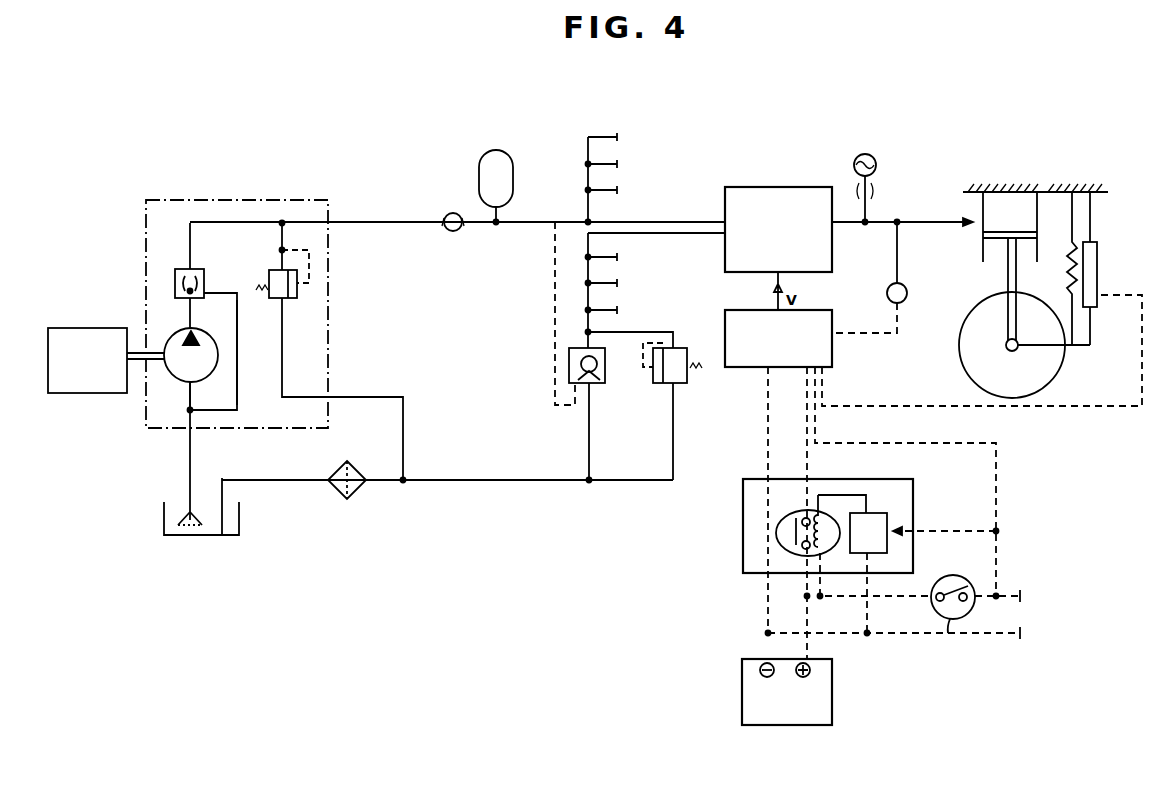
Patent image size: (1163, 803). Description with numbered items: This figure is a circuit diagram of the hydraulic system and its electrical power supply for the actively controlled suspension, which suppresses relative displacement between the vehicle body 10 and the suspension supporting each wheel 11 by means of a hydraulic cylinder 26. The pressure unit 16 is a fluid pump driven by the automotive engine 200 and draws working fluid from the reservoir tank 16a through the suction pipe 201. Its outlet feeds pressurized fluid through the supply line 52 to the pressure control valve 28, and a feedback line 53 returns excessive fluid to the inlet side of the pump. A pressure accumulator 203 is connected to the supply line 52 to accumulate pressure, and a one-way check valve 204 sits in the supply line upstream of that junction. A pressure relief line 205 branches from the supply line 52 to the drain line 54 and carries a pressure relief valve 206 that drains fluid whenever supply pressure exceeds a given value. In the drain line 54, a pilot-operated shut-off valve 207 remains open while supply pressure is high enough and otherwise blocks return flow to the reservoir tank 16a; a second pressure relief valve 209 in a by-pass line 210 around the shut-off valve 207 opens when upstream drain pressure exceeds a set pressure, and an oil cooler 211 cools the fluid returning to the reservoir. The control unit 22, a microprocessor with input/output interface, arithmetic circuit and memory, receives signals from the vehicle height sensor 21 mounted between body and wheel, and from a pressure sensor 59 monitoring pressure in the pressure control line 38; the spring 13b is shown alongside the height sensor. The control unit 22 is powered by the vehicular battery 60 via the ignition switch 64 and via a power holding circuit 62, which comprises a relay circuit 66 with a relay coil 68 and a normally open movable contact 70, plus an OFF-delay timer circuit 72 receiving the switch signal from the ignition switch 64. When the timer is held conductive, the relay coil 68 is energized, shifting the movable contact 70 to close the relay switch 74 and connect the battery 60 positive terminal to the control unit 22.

The automotive engine 200 is at (87, 327).
The pressure unit 16 is at (167, 387).
The reservoir tank 16a is at (163, 518).
The suction pipe 201 is at (190, 464).
The feedback line 53 is at (237, 333).
The pressure relief valve 206 is at (297, 294).
The pressure relief line 205 is at (282, 358).
The supply line 52 is at (358, 222).
The one-way check valve 204 is at (450, 214).
The pressure accumulator 203 is at (514, 168).
The shut-off valve 207 is at (569, 370).
The by-pass line 210 is at (671, 432).
The pressure relief valve 209 is at (688, 385).
The drain line 54 is at (528, 482).
The oil cooler 211 is at (360, 492).
The pressure control valve 28 is at (771, 187).
The pressure control line 38 is at (855, 226).
The control unit 22 is at (724, 319).
The pressure sensor 59 is at (908, 292).
The vehicle body 10 is at (1040, 190).
The hydraulic cylinder 26 is at (983, 232).
The wheel 11 is at (1010, 388).
The spring 13b is at (1073, 277).
The vehicle height sensor 21 is at (1098, 252).
The power holding circuit 62 is at (915, 487).
The relay circuit 66 is at (777, 537).
The movable contact 70 is at (780, 528).
The relay coil 68 is at (821, 519).
The OFF-delay timer circuit 72 is at (888, 545).
The relay switch 74 is at (795, 550).
The vehicular battery 60 is at (838, 668).
The ignition switch 64 is at (971, 618).